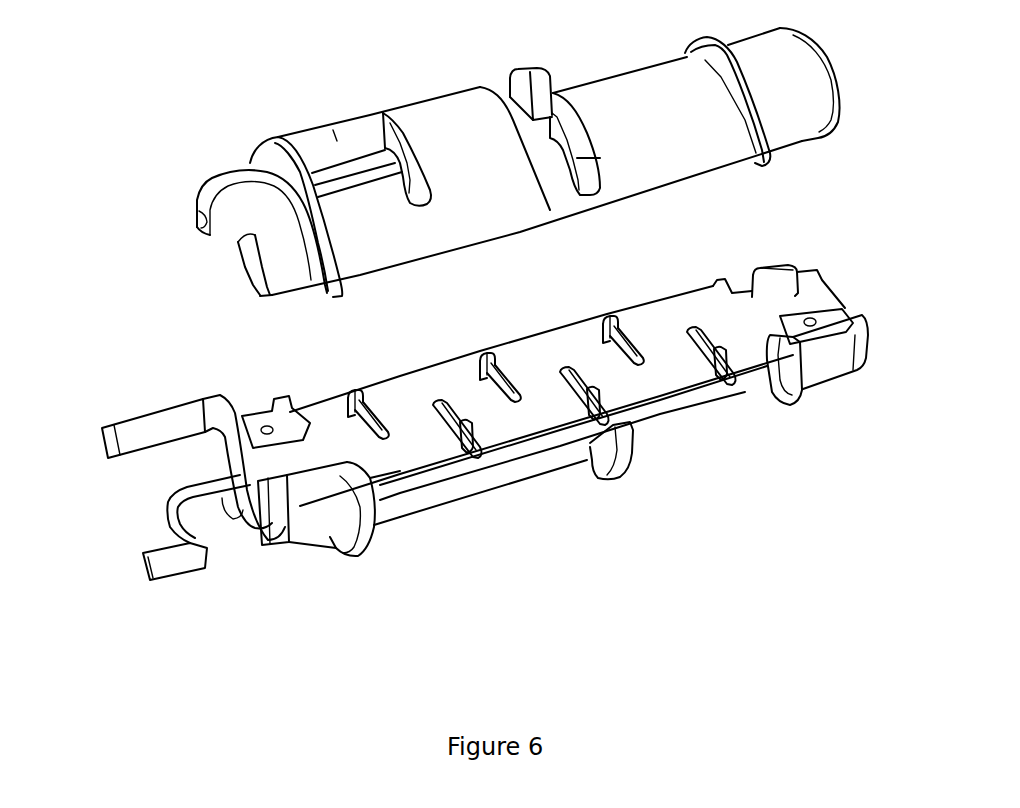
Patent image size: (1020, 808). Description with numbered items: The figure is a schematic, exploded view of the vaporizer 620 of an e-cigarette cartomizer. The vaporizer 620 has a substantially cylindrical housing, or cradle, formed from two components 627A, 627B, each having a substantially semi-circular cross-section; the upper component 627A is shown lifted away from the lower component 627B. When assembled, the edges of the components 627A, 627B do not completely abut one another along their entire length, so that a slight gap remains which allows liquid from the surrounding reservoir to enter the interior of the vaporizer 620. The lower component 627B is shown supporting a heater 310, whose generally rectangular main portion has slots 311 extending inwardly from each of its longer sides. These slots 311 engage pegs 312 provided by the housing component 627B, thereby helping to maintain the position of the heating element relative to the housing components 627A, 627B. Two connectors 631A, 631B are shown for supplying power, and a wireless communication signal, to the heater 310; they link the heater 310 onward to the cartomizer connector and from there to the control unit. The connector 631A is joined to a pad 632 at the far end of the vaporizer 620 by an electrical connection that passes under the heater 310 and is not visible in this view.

The housing component 627A is at (187, 243).
The housing component 627B is at (495, 502).
The connector 631A is at (132, 433).
The connector 631B is at (168, 558).
The mounting ear 632 is at (820, 312).
The heater 310 is at (688, 367).
The slots 311 is at (503, 386).
The pegs 312 is at (477, 358).
The vaporizer 620 is at (860, 582).